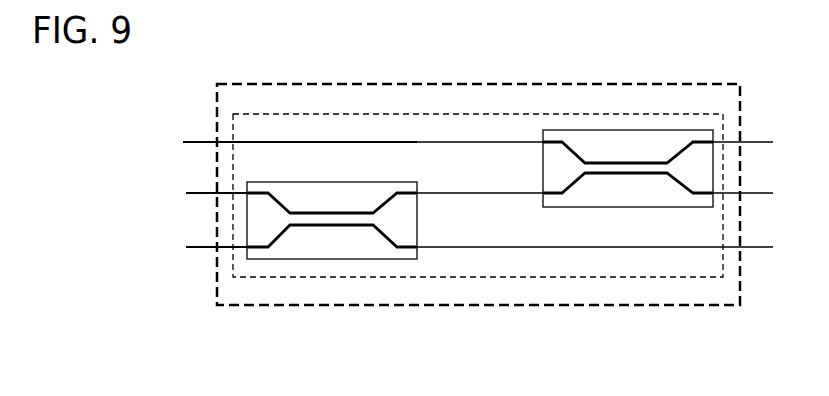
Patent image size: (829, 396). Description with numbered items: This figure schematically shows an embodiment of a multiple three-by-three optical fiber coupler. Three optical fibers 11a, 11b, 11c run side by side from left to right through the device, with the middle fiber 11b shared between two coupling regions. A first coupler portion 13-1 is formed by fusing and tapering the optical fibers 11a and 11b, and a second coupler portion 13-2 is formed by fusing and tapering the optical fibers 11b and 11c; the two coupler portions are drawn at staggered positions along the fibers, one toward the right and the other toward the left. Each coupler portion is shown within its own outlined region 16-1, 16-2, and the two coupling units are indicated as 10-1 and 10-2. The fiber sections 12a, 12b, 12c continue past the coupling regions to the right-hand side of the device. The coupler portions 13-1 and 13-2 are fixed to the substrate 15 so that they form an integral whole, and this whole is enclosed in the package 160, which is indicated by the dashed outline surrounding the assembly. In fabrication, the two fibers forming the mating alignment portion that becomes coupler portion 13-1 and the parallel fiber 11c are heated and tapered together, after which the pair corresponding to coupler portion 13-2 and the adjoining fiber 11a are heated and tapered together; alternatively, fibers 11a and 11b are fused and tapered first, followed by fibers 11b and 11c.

The first optical coupler 10-1 is at (612, 142).
The second optical coupler 10-2 is at (332, 198).
The optical fiber 11a is at (197, 141).
The optical fiber 11b is at (197, 193).
The optical fiber 11c is at (207, 248).
The first output waveguide 12a is at (489, 142).
The second output waveguide 12b is at (492, 193).
The third output waveguide 12c is at (507, 248).
The coupler portion 13-1 is at (615, 174).
The coupler portion 13-2 is at (327, 226).
The substrate 15 is at (587, 280).
The first coupler body 16-1 is at (630, 129).
The second coupler body 16-2 is at (323, 181).
The package 160 is at (573, 95).